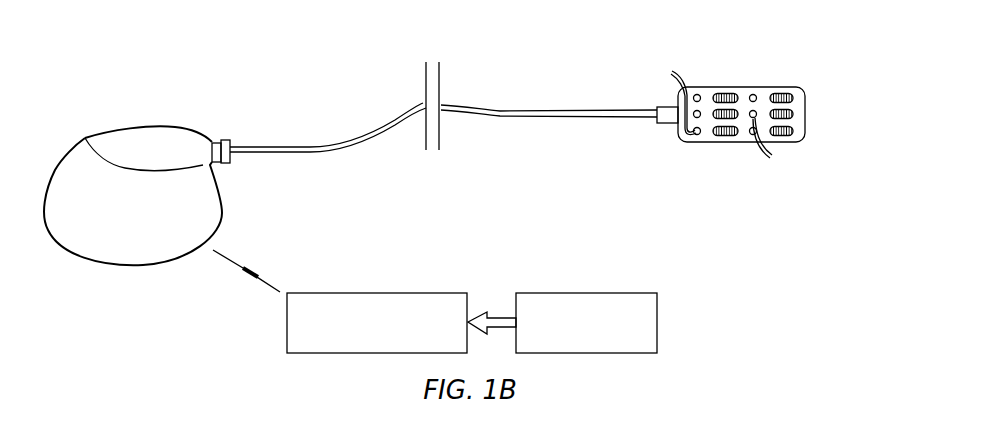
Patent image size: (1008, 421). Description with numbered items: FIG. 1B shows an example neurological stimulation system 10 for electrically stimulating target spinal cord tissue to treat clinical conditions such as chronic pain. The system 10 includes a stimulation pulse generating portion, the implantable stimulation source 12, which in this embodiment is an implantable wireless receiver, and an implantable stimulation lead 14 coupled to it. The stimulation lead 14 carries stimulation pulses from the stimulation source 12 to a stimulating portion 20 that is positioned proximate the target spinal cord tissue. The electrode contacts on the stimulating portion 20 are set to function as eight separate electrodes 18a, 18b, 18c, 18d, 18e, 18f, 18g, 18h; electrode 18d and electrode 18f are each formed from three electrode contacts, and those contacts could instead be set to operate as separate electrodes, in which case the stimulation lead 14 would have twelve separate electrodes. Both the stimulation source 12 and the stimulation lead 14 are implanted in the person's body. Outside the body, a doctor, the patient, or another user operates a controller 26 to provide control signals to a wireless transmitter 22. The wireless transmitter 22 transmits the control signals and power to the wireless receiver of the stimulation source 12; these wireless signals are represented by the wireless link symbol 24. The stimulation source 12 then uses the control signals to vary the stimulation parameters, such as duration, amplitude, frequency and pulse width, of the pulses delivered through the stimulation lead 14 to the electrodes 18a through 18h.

The neurological stimulation system 10 is at (588, 57).
The stimulation source 12 is at (135, 127).
The stimulation lead 14 is at (275, 146).
The electrode 18a is at (797, 132).
The electrode 18b is at (725, 142).
The electrode 18c is at (797, 113).
The electrode 18d is at (783, 132).
The electrode 18e is at (705, 140).
The electrode 18f is at (668, 98).
The electrode 18g is at (797, 97).
The electrode 18h is at (725, 93).
The stimulating portion 20 is at (768, 86).
The wireless transmitter 22 is at (387, 292).
The wireless link symbol 24 is at (255, 273).
The controller 26 is at (623, 292).